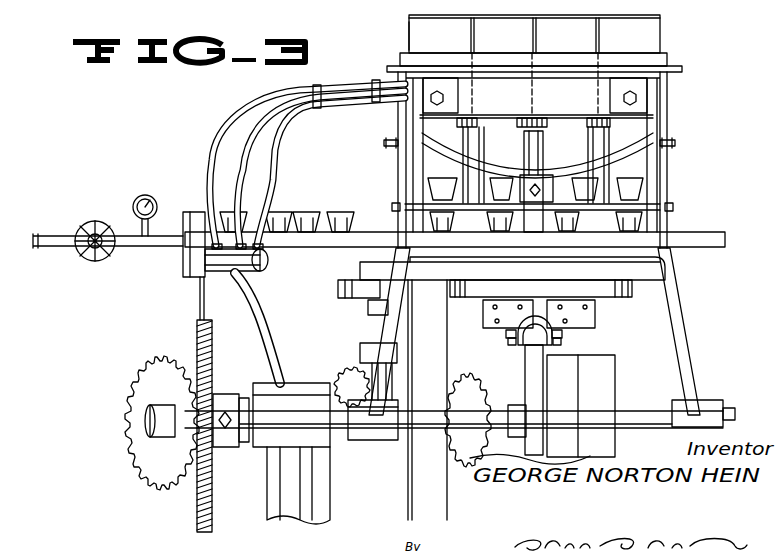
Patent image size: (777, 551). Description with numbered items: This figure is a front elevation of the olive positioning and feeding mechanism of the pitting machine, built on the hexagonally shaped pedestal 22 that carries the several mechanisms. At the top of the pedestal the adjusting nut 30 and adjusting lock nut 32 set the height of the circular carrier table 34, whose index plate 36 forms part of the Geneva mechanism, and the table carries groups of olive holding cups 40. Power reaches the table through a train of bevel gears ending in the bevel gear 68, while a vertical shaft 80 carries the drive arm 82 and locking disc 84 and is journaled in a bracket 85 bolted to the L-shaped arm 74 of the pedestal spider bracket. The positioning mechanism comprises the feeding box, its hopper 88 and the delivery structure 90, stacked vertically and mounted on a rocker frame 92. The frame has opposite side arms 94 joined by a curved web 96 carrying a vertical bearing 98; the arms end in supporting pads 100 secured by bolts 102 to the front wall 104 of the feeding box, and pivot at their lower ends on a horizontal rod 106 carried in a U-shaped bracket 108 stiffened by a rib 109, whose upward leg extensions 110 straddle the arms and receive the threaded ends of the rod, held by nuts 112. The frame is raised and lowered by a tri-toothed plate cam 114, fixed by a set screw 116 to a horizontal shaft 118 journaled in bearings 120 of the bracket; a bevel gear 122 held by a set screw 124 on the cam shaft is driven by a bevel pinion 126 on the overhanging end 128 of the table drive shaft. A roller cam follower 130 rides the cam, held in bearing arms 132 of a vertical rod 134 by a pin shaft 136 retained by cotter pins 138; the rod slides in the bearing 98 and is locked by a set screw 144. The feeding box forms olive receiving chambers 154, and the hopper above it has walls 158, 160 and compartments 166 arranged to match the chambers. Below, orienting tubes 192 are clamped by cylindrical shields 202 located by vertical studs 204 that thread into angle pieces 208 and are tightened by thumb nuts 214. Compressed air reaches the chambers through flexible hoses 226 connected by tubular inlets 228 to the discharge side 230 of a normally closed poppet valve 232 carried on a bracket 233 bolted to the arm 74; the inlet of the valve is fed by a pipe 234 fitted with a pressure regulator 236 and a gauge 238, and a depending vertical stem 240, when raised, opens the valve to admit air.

The pedestal 22 is at (615, 372).
The adjusting nut 30 is at (585, 311).
The adjusting lock nut 32 is at (585, 327).
The carrier table 34 is at (726, 236).
The index plate 36 is at (632, 291).
The olive holding cups 40 is at (349, 210).
The bevel gear 68 is at (455, 457).
The L-shaped arm 74 is at (300, 525).
The vertical shaft 80 is at (368, 305).
The drive arm 82 is at (459, 318).
The locking disc 84 is at (338, 286).
The bracket 85 is at (434, 305).
The hopper 88 is at (409, 41).
The delivery structure 90 is at (660, 178).
The rocker frame 92 is at (425, 173).
The side arms 94 is at (420, 156).
The curved web 96 is at (668, 126).
The vertical bearing 98 is at (511, 188).
The supporting pads 100 is at (535, 93).
The bolts 102 is at (431, 97).
The front wall 104 is at (571, 95).
The horizontal rod 106 is at (626, 207).
The U-shaped bracket 108 is at (380, 328).
The rib 109 is at (536, 276).
The leg extensions 110 is at (400, 222).
The nuts 112 is at (392, 206).
The tri-toothed plate cam 114 is at (544, 388).
The set screw 116 is at (517, 404).
The cam shaft 118 is at (648, 413).
The bearings 120 is at (676, 432).
The bevel gear 122 is at (200, 526).
The set screw 124 is at (229, 450).
The bevel pinion 126 is at (150, 488).
The overhanging shaft end 128 is at (145, 422).
The roller cam follower 130 is at (519, 350).
The bearing arms 132 is at (505, 332).
The vertical rod 134 is at (546, 290).
The pin shaft 136 is at (505, 345).
The cotter pins 138 is at (508, 348).
The set screw 144 is at (546, 172).
The olive receiving chambers 154 is at (503, 95).
The shelf 158 is at (571, 68).
The hopper wall 160 is at (576, 16).
The compartment 166 is at (647, 34).
The orienting tubes 192 is at (535, 191).
The cylindrical shields 202 is at (478, 121).
The vertical studs 204 is at (398, 120).
The angle pieces 208 is at (393, 66).
The thumb nuts 214 is at (392, 143).
The flexible air hose 226 is at (246, 143).
The tubular inlets 228 is at (252, 246).
The discharge side 230 is at (266, 263).
The poppet valve 232 is at (183, 262).
The bracket 233 is at (268, 318).
The pipe 234 is at (70, 222).
The pressure regulator 236 is at (96, 221).
The gauge 238 is at (154, 197).
The valve stem 240 is at (200, 293).